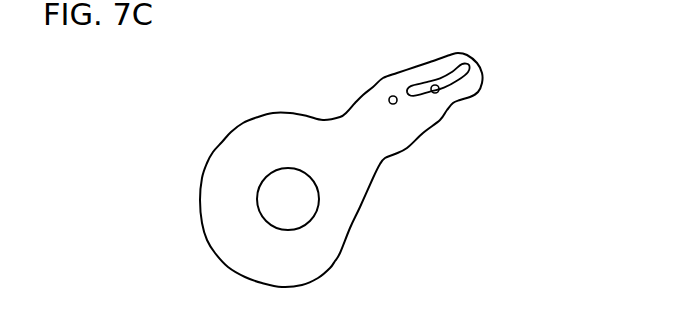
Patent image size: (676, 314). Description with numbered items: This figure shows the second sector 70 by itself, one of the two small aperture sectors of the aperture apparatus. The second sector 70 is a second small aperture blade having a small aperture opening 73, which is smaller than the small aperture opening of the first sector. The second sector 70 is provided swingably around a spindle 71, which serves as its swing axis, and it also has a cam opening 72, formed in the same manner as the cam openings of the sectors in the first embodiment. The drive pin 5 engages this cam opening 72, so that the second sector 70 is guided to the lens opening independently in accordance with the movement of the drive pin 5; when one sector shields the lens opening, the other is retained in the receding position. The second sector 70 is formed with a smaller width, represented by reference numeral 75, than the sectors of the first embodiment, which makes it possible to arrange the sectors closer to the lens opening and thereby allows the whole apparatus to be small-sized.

The second sector 70 is at (365, 162).
The spindle 71 is at (389, 98).
The cam opening 72 is at (450, 85).
The small aperture opening 73 is at (272, 192).
The drive pin 5 is at (436, 93).
The width 75 is at (344, 170).